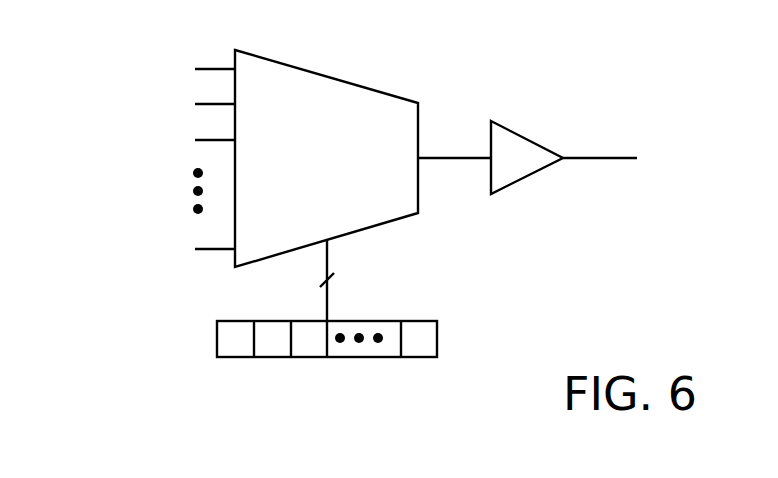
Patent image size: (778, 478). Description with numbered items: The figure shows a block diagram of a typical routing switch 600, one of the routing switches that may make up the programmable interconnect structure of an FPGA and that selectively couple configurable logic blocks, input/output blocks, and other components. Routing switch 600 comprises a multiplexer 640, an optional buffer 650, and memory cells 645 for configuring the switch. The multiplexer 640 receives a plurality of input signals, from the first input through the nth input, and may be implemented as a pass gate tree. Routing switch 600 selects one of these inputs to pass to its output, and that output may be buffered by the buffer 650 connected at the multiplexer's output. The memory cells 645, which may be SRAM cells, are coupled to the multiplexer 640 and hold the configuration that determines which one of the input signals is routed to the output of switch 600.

The routing switch 600 is at (89, 43).
The multiplexer 640 is at (347, 169).
The buffer 650 is at (540, 169).
The memory cells 645 is at (217, 374).